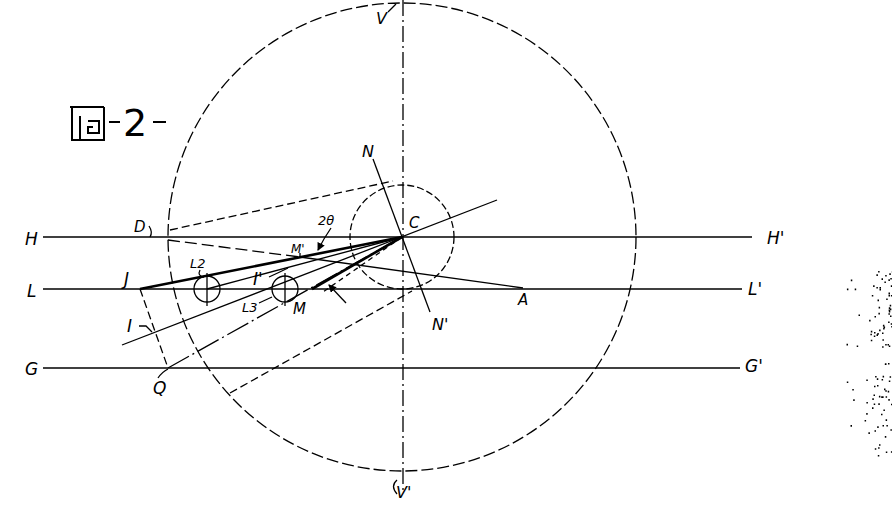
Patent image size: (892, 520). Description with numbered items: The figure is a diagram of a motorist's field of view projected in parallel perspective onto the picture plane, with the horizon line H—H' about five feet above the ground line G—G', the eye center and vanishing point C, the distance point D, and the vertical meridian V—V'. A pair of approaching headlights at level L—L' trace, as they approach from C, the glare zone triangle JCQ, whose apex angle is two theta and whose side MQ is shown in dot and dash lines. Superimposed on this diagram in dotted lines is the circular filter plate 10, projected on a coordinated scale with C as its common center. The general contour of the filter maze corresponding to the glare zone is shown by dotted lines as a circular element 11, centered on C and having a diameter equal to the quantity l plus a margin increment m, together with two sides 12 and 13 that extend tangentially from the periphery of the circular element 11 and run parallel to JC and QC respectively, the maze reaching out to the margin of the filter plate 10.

The filter plate 10 is at (630, 172).
The circular element of the maze contour 11 is at (440, 193).
The side of the maze contour 12 is at (312, 199).
The side of the maze contour 13 is at (339, 334).